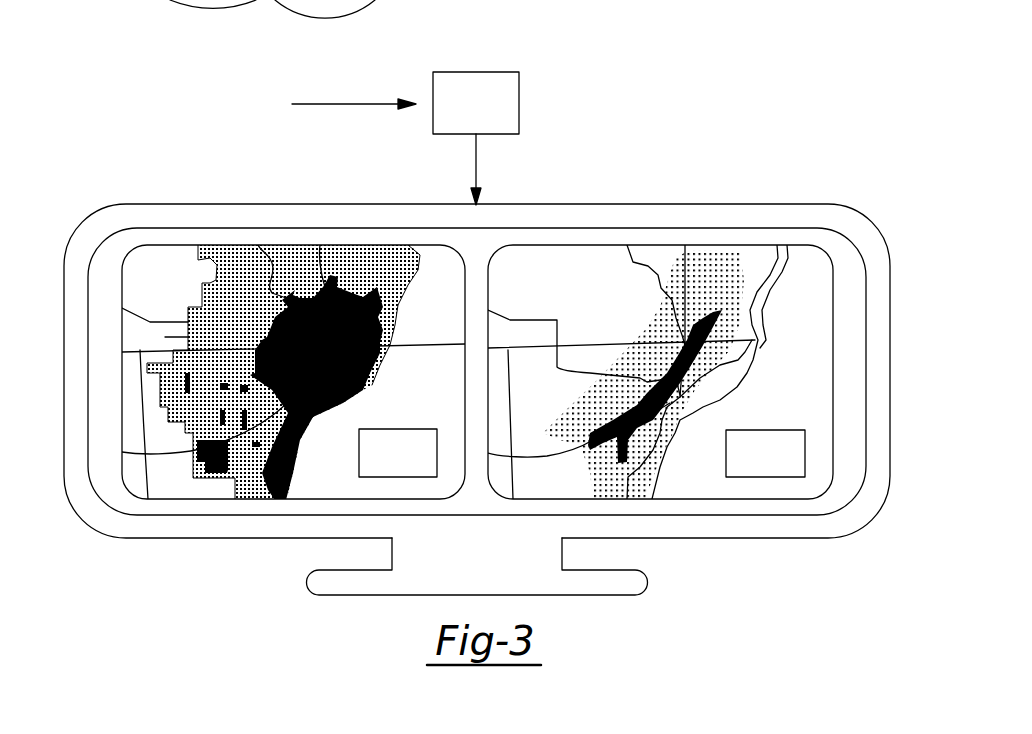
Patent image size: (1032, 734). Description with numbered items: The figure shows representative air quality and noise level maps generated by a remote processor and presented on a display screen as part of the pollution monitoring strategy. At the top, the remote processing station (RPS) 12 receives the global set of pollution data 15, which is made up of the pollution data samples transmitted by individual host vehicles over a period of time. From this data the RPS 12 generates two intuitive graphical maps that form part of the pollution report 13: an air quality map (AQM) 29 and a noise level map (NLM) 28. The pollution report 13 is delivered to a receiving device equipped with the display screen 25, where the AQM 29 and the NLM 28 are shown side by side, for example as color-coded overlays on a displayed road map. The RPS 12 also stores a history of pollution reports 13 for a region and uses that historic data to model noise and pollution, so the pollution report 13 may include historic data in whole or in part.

The remote processing station 12 is at (476, 72).
The pollution report 13 is at (476, 172).
The global set of pollution data 15 is at (330, 104).
The display screen 25 is at (758, 204).
The noise level map 28 is at (818, 381).
The air quality map 29 is at (133, 381).